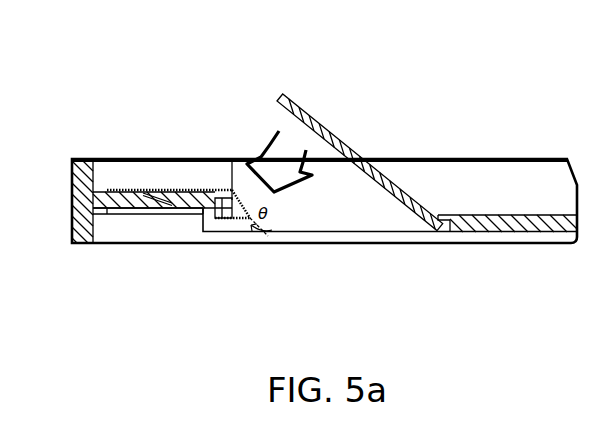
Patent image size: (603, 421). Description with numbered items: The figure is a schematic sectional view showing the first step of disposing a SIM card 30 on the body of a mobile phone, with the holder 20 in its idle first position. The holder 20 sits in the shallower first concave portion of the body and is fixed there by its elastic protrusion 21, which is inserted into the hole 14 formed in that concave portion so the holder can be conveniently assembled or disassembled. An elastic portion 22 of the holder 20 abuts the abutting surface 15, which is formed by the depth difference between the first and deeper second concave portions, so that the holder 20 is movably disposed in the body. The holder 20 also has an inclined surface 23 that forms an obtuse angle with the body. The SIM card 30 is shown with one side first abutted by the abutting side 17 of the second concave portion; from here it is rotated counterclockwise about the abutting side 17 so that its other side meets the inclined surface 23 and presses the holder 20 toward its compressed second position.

The hole 14 is at (138, 203).
The abutting surface 15 is at (219, 203).
The abutting side 17 is at (443, 233).
The holder 20 is at (203, 182).
The protrusion 21 is at (158, 197).
The elastic portion 22 is at (228, 206).
The inclined surface 23 is at (240, 197).
The SIM card 30 is at (335, 137).